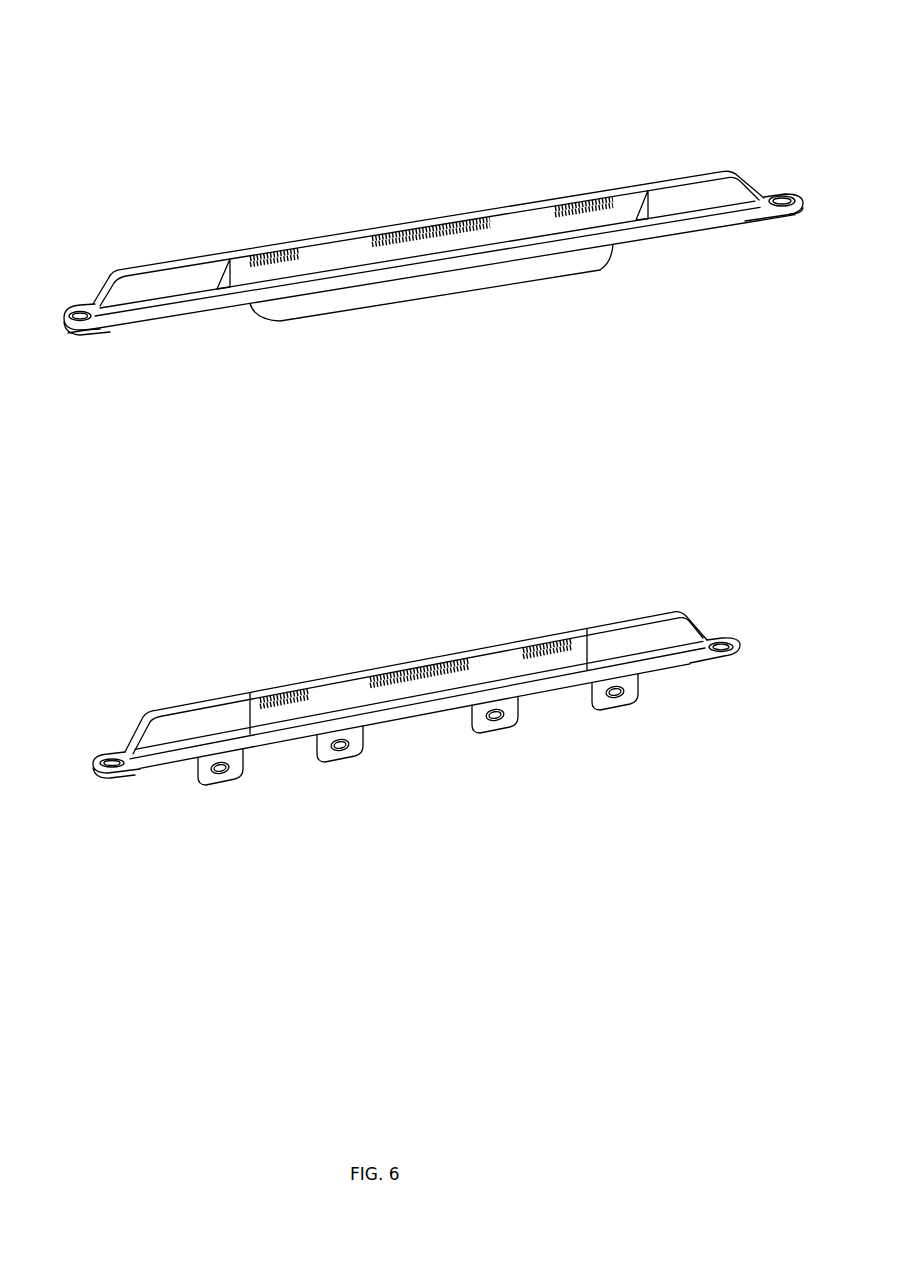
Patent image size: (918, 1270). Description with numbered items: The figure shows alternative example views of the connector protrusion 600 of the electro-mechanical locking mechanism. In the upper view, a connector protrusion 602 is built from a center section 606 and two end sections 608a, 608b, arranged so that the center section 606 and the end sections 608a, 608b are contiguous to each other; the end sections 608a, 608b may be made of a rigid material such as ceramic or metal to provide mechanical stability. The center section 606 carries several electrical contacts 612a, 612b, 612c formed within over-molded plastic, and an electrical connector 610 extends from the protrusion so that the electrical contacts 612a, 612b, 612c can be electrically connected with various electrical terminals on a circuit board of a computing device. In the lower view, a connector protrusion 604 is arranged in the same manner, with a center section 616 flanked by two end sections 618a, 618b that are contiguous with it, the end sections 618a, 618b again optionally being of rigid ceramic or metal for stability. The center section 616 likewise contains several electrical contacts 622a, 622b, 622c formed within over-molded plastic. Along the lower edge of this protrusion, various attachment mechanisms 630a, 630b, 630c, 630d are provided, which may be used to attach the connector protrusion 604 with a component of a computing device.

The connector protrusion 600 is at (146, 68).
The connector protrusion 602 is at (745, 344).
The connector protrusion 604 is at (745, 744).
The center section 606 is at (527, 222).
The end section 608a is at (682, 185).
The end section 608b is at (170, 270).
The electrical connector 610 is at (460, 296).
The electrical contact 612a is at (446, 233).
The electrical contact 612b is at (285, 254).
The electrical contact 612c is at (586, 205).
The center section 616 is at (497, 663).
The end section 618a is at (663, 630).
The end section 618b is at (183, 720).
The electrical contact 622a is at (292, 690).
The electrical contact 622b is at (418, 666).
The electrical contact 622c is at (550, 644).
The attachment mechanism 630a is at (227, 786).
The attachment mechanism 630b is at (346, 764).
The attachment mechanism 630c is at (505, 729).
The attachment mechanism 630d is at (622, 706).